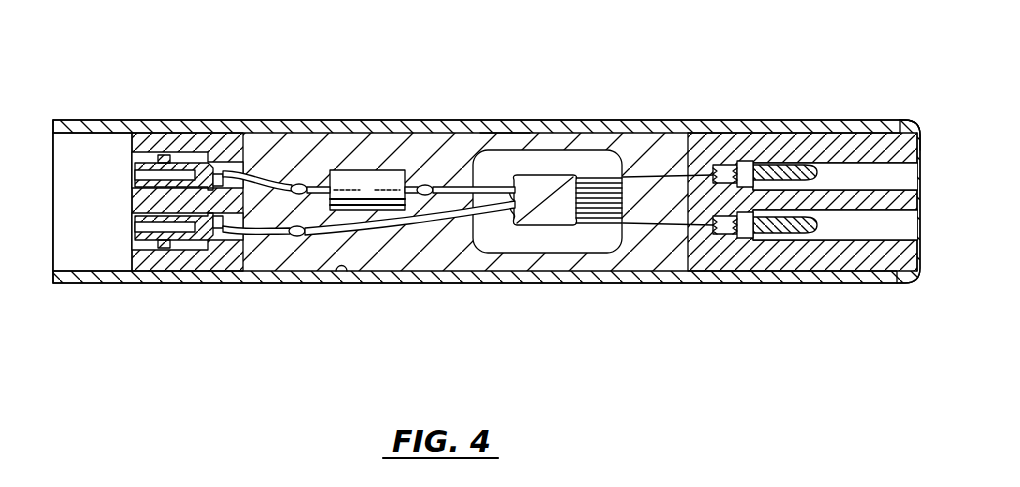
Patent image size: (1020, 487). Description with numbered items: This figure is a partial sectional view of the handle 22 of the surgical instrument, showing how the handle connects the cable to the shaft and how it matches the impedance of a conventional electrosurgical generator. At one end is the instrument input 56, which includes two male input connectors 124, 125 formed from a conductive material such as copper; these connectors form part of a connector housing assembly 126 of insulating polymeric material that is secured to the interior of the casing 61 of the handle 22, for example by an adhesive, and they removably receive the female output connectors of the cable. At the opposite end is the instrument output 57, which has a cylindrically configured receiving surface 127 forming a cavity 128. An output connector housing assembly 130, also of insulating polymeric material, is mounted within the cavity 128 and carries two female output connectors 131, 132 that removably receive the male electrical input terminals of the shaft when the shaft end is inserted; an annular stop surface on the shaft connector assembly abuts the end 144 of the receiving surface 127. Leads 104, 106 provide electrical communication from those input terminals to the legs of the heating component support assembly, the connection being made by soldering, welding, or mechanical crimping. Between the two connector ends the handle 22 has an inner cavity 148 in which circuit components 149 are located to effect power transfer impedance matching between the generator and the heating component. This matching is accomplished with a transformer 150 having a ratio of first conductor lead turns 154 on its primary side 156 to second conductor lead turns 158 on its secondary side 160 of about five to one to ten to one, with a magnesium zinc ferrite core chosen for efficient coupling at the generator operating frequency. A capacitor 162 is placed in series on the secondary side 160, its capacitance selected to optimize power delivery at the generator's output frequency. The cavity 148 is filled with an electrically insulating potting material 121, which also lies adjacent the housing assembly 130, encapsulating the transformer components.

The handle 22 is at (447, 161).
The instrument input 56 is at (877, 295).
The instrument output 57 is at (196, 214).
The casing 61 is at (817, 120).
The lead 104 is at (660, 177).
The lead 106 is at (652, 250).
The potting material 121 is at (290, 247).
The male input connector 124 is at (787, 165).
The male input connector 125 is at (772, 243).
The connector housing assembly 126 is at (797, 211).
The receiving surface 127 is at (88, 140).
The cavity 128 is at (113, 153).
The output connector housing assembly 130 is at (209, 118).
The female output connector 131 is at (162, 156).
The female output connector 132 is at (158, 250).
The end of receiving surface 144 is at (52, 283).
The inner cavity 148 is at (347, 271).
The circuit components 149 is at (474, 152).
The transformer 150 is at (562, 172).
The first conductor lead turns 154 is at (560, 227).
The primary side 156 is at (586, 147).
The second conductor lead turns 158 is at (533, 227).
The secondary side 160 is at (505, 122).
The capacitor 162 is at (373, 177).